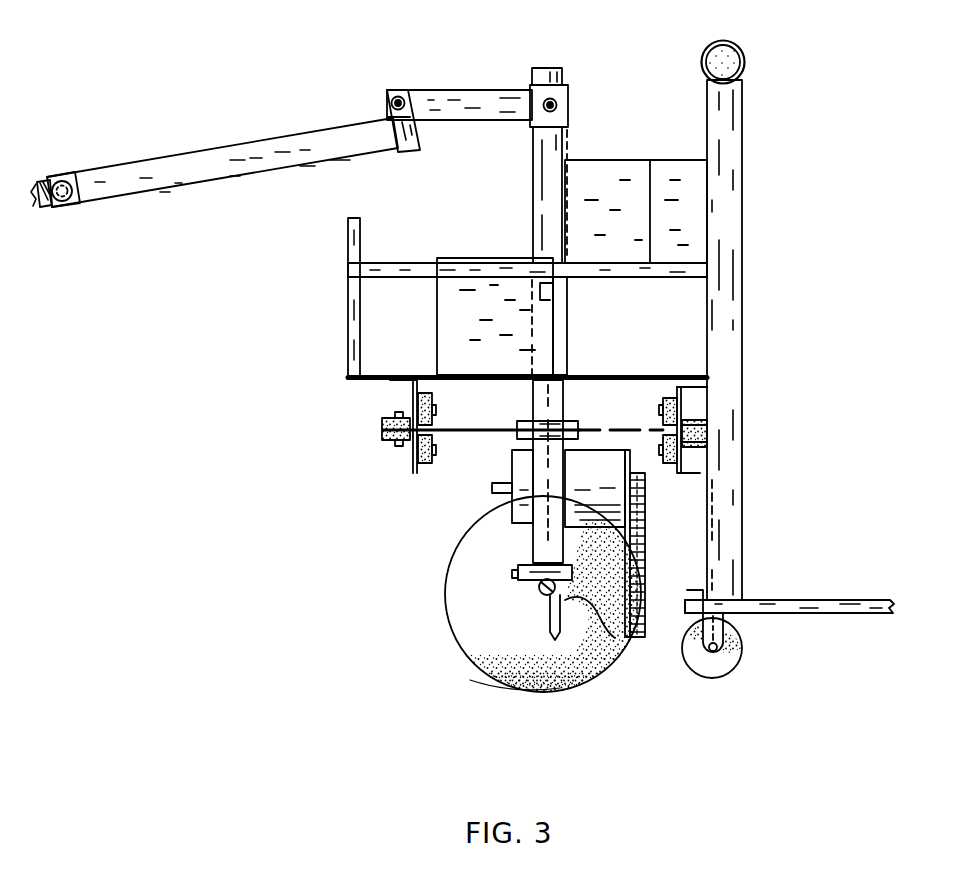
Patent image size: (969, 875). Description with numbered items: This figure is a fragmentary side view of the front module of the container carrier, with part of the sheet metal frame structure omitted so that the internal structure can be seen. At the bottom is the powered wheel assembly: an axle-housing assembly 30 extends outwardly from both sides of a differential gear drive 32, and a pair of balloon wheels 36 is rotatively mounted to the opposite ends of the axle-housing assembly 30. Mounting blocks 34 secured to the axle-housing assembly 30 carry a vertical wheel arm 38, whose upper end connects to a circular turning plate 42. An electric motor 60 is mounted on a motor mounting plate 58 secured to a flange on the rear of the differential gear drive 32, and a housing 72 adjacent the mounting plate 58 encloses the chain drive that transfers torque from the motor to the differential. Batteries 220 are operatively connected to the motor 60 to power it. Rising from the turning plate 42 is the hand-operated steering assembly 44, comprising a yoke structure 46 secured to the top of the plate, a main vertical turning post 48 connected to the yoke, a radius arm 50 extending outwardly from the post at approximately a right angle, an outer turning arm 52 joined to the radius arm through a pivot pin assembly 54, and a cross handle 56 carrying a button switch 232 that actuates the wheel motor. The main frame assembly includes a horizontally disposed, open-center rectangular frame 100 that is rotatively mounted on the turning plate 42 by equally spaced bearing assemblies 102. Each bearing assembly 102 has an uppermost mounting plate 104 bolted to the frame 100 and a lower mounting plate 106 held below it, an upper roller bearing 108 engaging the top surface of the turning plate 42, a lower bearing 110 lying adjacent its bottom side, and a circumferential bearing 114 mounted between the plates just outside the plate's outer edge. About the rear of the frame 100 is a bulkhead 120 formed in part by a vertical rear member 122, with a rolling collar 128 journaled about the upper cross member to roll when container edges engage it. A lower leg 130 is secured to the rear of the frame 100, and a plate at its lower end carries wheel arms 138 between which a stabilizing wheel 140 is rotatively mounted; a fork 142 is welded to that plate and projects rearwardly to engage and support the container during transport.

The axle-housing assembly 30 is at (543, 594).
The differential gear drive 32 is at (545, 620).
The mounting blocks 34 is at (516, 569).
The balloon wheels 36 is at (562, 605).
The vertical wheel arm 38 is at (555, 516).
The circular turning plate 42 is at (455, 427).
The steering assembly 44 is at (513, 168).
The yoke structure 46 is at (553, 388).
The main vertical turning post 48 is at (547, 213).
The radius arm 50 is at (485, 97).
The outer turning arm 52 is at (268, 149).
The pivot pin assembly 54 is at (388, 102).
The cross handle 56 is at (80, 180).
The motor mounting plate 58 is at (608, 620).
The electric motor 60 is at (583, 482).
The housing 72 is at (650, 488).
The rectangular frame 100 is at (371, 381).
The bearing assembly 102 is at (395, 462).
The uppermost mounting plate 104 is at (693, 385).
The lower mounting plate 106 is at (678, 472).
The upper roller bearing 108 is at (415, 403).
The lower bearing 110 is at (417, 453).
The circumferential bearing 114 is at (383, 430).
The bulkhead 120 is at (795, 209).
The vertical rear member 122 is at (725, 127).
The rolling collar 128 is at (737, 42).
The lower leg 130 is at (728, 562).
The wheel arms 138 is at (707, 610).
The stabilizing wheel 140 is at (716, 670).
The fork 142 is at (783, 603).
The batteries 220 is at (678, 175).
The button switch 232 is at (33, 200).